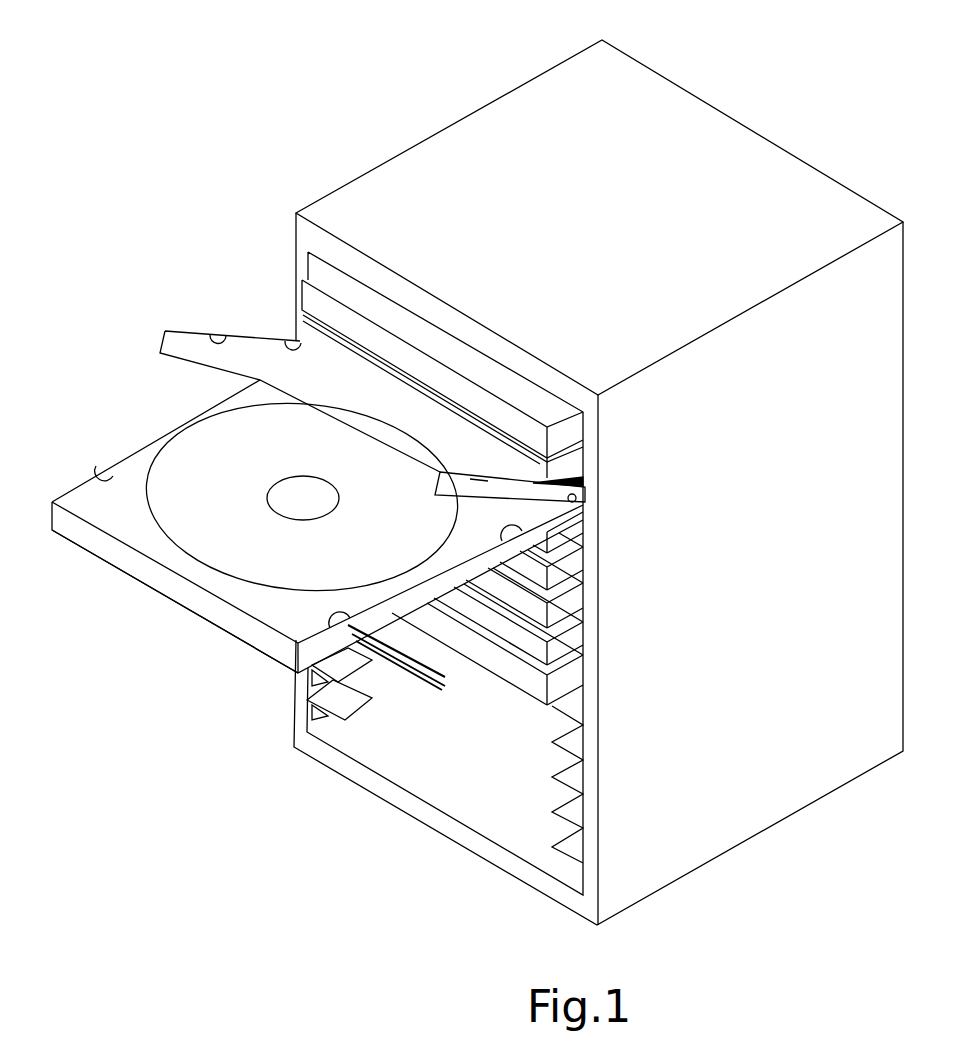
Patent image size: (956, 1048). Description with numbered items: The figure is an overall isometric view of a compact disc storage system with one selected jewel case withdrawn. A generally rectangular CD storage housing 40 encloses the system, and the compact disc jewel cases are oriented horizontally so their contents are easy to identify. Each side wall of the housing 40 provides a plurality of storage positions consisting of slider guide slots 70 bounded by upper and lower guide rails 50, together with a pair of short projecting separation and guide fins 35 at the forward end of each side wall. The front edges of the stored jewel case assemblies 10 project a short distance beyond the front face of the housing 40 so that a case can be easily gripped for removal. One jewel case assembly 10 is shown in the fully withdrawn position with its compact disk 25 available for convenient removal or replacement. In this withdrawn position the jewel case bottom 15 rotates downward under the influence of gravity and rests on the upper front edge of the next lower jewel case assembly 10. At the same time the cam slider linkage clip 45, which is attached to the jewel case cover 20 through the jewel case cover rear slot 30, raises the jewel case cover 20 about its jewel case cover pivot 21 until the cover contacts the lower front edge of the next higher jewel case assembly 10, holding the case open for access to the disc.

The jewel case assembly 10 is at (565, 647).
The jewel case bottom 15 is at (132, 567).
The jewel case cover 20 is at (165, 342).
The jewel case cover pivot 21 is at (580, 495).
The compact disk 25 is at (245, 557).
The jewel case cover rear slot 30 is at (293, 340).
The separation and guide fin 35 is at (357, 712).
The CD storage housing 40 is at (741, 166).
The cam slider linkage clip 45 is at (587, 483).
The guide rail 50 is at (410, 657).
The slider guide slot 70 is at (422, 660).